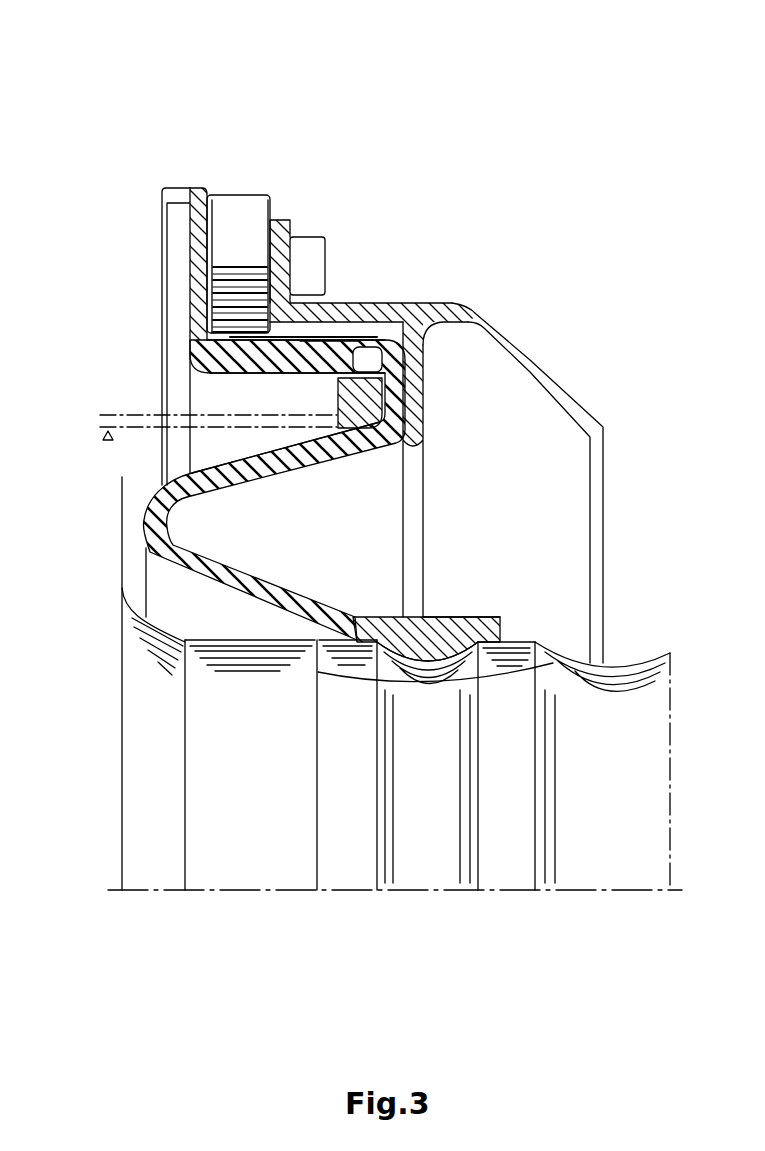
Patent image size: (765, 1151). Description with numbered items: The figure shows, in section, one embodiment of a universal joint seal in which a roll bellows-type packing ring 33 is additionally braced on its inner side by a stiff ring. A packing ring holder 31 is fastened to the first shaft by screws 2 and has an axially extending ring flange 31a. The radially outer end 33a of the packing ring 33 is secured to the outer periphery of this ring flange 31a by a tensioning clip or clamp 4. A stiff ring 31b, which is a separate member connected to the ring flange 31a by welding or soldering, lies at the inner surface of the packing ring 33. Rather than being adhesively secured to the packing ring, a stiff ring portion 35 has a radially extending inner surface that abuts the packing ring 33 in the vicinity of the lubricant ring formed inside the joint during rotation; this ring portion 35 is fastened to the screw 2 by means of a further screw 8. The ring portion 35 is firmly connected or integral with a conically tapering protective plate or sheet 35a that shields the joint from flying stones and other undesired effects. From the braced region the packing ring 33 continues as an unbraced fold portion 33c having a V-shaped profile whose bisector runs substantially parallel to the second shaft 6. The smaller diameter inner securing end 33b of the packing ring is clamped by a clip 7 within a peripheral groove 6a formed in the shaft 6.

The packing ring holder 31 is at (167, 188).
The screw 2 is at (228, 203).
The screw 8 is at (297, 237).
The stiff ring 31b is at (356, 380).
The packing ring 33 is at (394, 387).
The protective plate 35a is at (506, 336).
The radially outer end of the packing ring 33a is at (213, 358).
The axially extending ring flange 31a is at (262, 378).
The tensioning clip 4 is at (322, 338).
The stiff ring portion 35 is at (415, 398).
The second shaft 6 is at (352, 620).
The clip 7 is at (450, 617).
The unbraced fold portion 33c is at (225, 486).
The inner securing end 33b is at (500, 618).
The peripheral groove 6a is at (598, 668).